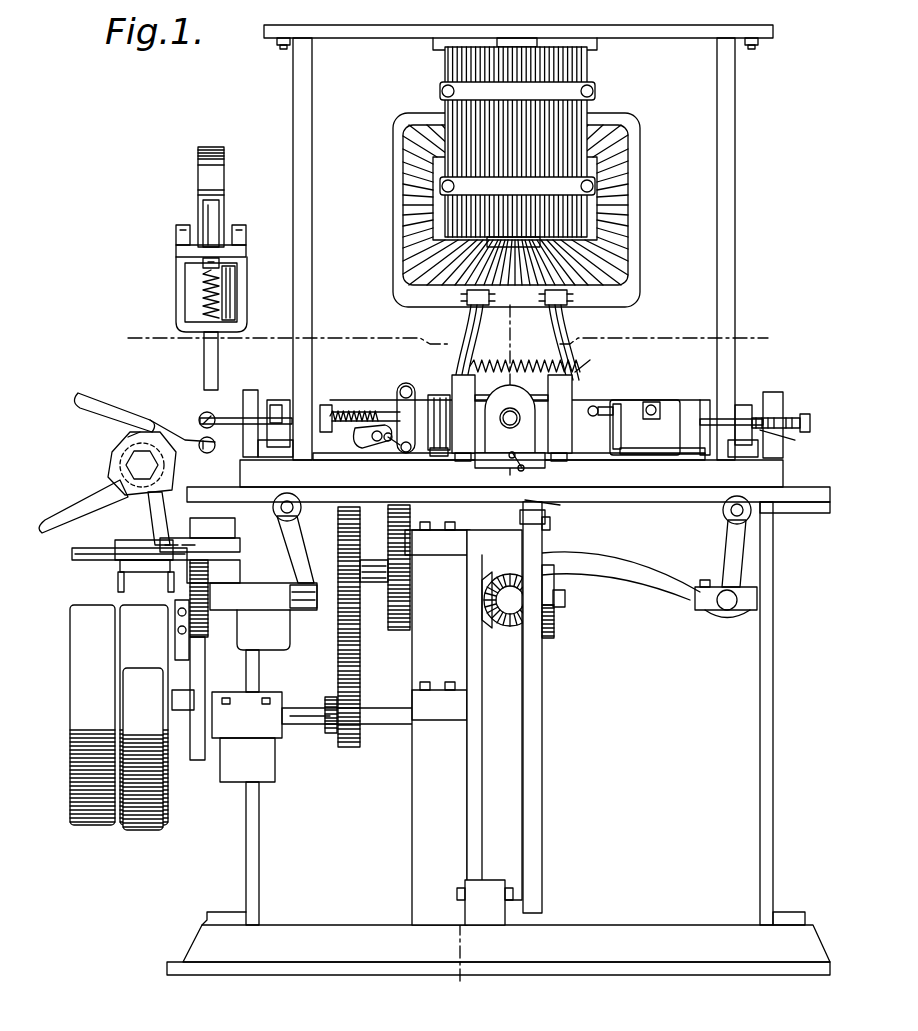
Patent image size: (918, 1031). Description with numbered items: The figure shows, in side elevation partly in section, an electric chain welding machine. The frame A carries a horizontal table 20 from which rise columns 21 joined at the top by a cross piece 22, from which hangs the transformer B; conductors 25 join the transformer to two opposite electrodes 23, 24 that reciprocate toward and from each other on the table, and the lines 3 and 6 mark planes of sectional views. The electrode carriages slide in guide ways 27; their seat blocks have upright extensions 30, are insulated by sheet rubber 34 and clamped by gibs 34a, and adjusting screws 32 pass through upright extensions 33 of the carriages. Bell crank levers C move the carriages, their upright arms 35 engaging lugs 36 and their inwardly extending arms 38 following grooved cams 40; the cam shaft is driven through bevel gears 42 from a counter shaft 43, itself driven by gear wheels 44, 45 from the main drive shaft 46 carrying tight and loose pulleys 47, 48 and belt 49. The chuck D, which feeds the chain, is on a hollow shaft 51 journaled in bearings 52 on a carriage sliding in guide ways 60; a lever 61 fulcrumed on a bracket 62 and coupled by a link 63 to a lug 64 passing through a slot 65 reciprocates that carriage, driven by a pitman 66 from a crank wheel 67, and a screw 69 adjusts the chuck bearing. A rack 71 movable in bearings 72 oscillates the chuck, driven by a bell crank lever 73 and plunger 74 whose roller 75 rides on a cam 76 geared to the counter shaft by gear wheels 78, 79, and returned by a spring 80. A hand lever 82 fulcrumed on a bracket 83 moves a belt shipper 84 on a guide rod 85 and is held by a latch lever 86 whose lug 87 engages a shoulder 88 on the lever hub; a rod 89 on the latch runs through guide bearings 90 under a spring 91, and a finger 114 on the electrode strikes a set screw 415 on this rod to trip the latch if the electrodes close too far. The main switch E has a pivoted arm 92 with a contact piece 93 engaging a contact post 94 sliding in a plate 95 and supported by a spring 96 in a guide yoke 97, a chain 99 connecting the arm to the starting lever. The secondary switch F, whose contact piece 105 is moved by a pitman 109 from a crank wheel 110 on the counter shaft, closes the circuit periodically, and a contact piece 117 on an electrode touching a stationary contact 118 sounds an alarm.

The cross piece 22 is at (400, 12).
The standards or columns 21 is at (304, 130).
The transformer B is at (636, 197).
The conductors 25 is at (556, 332).
The section line 6— 6 is at (487, 646).
The section line 3— 3 is at (449, 339).
The main or starting switch E is at (199, 265).
The pivoted switch arm 92 is at (224, 178).
The contact piece 93 is at (205, 163).
The contact post 94 is at (216, 210).
The plate 95 is at (182, 254).
The spring 96 is at (205, 290).
The guide yoke 97 is at (233, 292).
The hand lever 82 is at (100, 482).
The latch lever 86 is at (137, 410).
The lug 87 is at (152, 430).
The shoulder or projection 88 is at (130, 436).
The bracket 83 is at (179, 496).
The belt shipper 84 is at (141, 540).
The horizontal guide rod 85 is at (80, 560).
The upright extensions 33 is at (252, 368).
The guide bearings 90 is at (250, 392).
The adjusting screws 32 is at (232, 412).
The rod 89 is at (282, 400).
The upright extensions 30 is at (310, 388).
The insulating material 34 is at (795, 437).
The chuck D is at (608, 362).
The electrode 23 is at (360, 410).
The spring 91 is at (336, 410).
The rod or plunger 74 is at (364, 440).
The bell crank lever 73 is at (415, 400).
The finger or projection 114 is at (405, 383).
The stack 415 is at (453, 425).
The spring 80 is at (522, 372).
The bearings 72 is at (517, 418).
The rack 71 is at (490, 385).
The hollow shaft or sleeve 51 is at (510, 419).
The slot 65 is at (546, 462).
The screw 69 is at (512, 470).
The bearings 52 is at (577, 372).
The electrode 24 is at (680, 400).
The stationary contact piece 118 is at (615, 404).
The contact piece 117 is at (651, 402).
The gibs or plates 34a is at (690, 455).
The guide ways 27 is at (511, 471).
The horizontal table 20 is at (615, 502).
The frame A is at (772, 572).
The lugs 36 is at (301, 510).
The upright arms 35 is at (310, 535).
The bell crank levers C is at (335, 545).
The inwardly extending arms 38 is at (632, 552).
The crank wheel 110 is at (210, 590).
The chain 99 is at (204, 552).
The pitman 109 is at (178, 624).
The secondary switch F is at (196, 666).
The contact piece 105 is at (210, 738).
The tight pulley 47 is at (92, 715).
The loose pulley 48 is at (144, 715).
The belt 49 is at (143, 749).
The gear wheel 44 is at (340, 642).
The shaft 43 is at (408, 581).
The cam 76 is at (370, 566).
The gear wheel 79 is at (400, 580).
The gear wheel 78 is at (405, 626).
The horizontal shaft 46 is at (378, 726).
The gear wheel 45 is at (350, 700).
The anti-friction roller 75 is at (437, 711).
The guide ways 60 is at (462, 511).
The grooved cams 40 is at (512, 630).
The bevel gears 42 is at (506, 628).
The lever 61 is at (542, 742).
The bracket 62 is at (485, 902).
The pitman 66 is at (565, 604).
The crank wheel 67 is at (552, 640).
The lug 64 is at (545, 503).
The link 63 is at (548, 527).